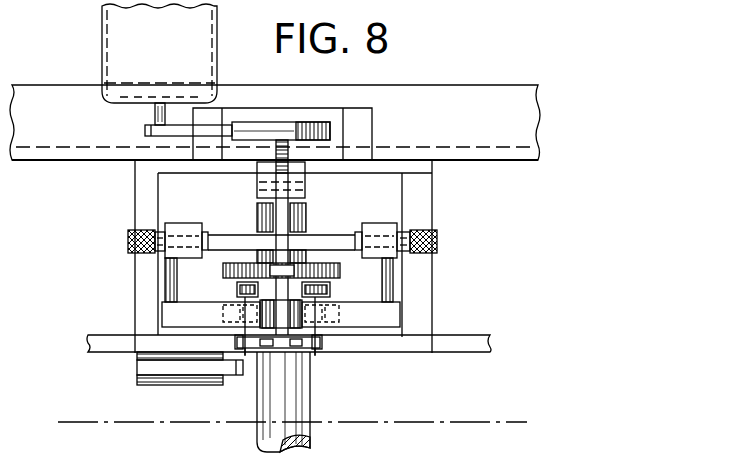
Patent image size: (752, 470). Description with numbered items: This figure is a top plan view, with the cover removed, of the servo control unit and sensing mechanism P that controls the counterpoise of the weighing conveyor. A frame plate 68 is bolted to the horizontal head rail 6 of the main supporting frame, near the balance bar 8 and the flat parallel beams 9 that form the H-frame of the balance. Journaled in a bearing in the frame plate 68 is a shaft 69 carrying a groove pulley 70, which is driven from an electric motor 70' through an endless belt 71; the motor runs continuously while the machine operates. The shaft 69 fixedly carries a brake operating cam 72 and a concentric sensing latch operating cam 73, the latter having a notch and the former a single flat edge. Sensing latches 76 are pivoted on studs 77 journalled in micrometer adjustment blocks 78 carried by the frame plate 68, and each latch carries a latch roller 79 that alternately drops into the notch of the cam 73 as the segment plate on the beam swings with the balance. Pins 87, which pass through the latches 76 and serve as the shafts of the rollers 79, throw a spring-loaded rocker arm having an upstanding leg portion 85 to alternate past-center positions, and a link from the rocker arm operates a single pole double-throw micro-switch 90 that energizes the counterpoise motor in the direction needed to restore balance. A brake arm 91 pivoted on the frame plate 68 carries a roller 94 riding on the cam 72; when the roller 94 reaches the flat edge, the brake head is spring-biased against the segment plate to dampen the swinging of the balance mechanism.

The head rail 6 is at (433, 92).
The balance bar 8 is at (266, 405).
The flat parallel beams 9 is at (457, 340).
The frame plate 68 is at (432, 163).
The shaft 69 is at (288, 153).
The groove pulley 70 is at (281, 100).
The electric motor 70' is at (133, 53).
The endless belt 71 is at (212, 130).
The brake operating cam 72 is at (336, 273).
The sensing latch operating cam 73 is at (235, 283).
The sensing latches 76 is at (165, 312).
The studs 77 is at (170, 274).
The micrometer adjustment blocks 78 is at (170, 229).
The latch rollers 79 is at (237, 291).
The upstanding leg portion 85 is at (318, 348).
The pins 87 is at (250, 355).
The micro-switch 90 is at (172, 385).
The brake arm 91 is at (290, 193).
The roller 94 is at (290, 268).
The control mechanism P is at (118, 291).